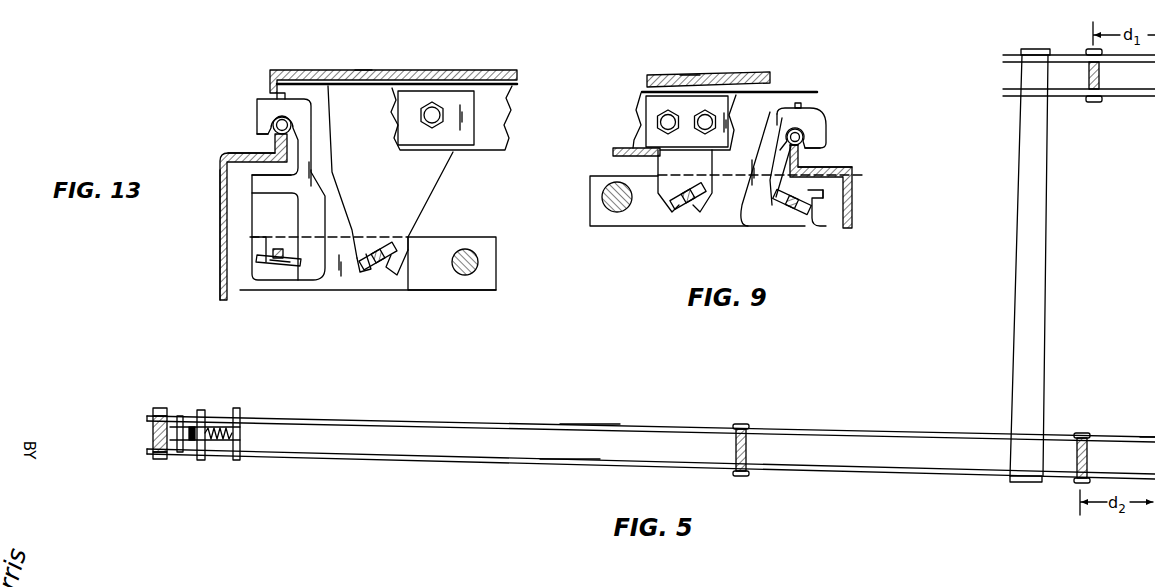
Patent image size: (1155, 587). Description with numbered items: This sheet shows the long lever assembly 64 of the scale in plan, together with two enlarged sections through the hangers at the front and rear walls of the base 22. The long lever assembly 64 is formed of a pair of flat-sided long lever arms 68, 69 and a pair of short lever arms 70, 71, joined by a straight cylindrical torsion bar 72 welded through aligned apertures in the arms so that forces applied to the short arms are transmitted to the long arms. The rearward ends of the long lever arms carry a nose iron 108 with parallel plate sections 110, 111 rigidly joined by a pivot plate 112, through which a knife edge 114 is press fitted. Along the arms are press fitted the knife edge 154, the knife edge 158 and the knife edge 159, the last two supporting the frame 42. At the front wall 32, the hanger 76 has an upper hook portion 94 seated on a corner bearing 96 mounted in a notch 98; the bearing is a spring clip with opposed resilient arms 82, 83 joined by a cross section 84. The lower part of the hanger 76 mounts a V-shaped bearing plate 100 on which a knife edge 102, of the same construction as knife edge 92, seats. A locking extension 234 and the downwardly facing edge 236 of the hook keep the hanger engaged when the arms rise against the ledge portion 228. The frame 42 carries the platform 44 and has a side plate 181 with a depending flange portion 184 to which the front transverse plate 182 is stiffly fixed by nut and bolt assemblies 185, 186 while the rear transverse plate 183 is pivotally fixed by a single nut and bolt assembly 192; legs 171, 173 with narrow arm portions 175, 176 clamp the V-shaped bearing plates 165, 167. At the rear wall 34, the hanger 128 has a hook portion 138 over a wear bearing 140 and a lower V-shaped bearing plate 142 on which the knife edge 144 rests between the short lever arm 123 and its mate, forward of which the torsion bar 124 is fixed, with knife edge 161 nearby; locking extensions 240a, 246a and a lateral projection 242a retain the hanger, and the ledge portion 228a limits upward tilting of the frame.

In FIG. 13, the base 22 is at (219, 233).
In FIG. 9, the front wall 32 is at (853, 202).
In FIG. 13, the rear wall 34 is at (220, 160).
In FIG. 13, the frame 42 is at (398, 82).
In FIG. 9, the frame 42 is at (757, 89).
In FIG. 13, the platform 44 is at (456, 72).
In FIG. 9, the platform 44 is at (722, 77).
In FIG. 5, the long lever assembly 64 is at (644, 416).
In FIG. 5, the long lever arm 68 is at (568, 463).
In FIG. 5, the long lever arm 69 is at (586, 423).
In FIG. 5, the short lever arm 70 is at (1133, 98).
In FIG. 9, the short lever arm 71 is at (605, 174).
In FIG. 5, the short lever arm 71 is at (1077, 58).
In FIG. 9, the torsion bar 72 is at (617, 213).
In FIG. 5, the torsion bar 72 is at (1035, 267).
In FIG. 9, the hanger 76 is at (757, 148).
In FIG. 9, the resilient arm 82 is at (787, 150).
In FIG. 9, the resilient arm 83 is at (820, 148).
In FIG. 13, the cross section 84 is at (503, 134).
In FIG. 9, the cross section 84 is at (778, 113).
In FIG. 5, the knife edge 92 is at (1154, 463).
In FIG. 9, the hook portion 94 is at (820, 140).
In FIG. 9, the corner bearing 96 is at (809, 131).
In FIG. 9, the notch 98 is at (801, 107).
In FIG. 9, the V-shaped bearing plate 100 is at (778, 204).
In FIG. 9, the knife edge 102 is at (804, 215).
In FIG. 5, the nose iron 108 is at (147, 454).
In FIG. 5, the plate section 110 is at (178, 452).
In FIG. 5, the plate section 111 is at (178, 416).
In FIG. 5, the pivot plate 112 is at (207, 428).
In FIG. 5, the knife edge 114 is at (152, 431).
In FIG. 13, the short lever arm 123 is at (488, 241).
In FIG. 13, the torsion bar 124 is at (478, 262).
In FIG. 13, the hanger 128 is at (334, 152).
In FIG. 13, the hook portion 138 is at (268, 107).
In FIG. 13, the wear bearing 140 is at (292, 122).
In FIG. 13, the V-shaped bearing plate 142 is at (288, 264).
In FIG. 13, the knife edge 144 is at (288, 250).
In FIG. 5, the knife edge 154 is at (742, 424).
In FIG. 5, the knife edge 158 is at (1076, 447).
In FIG. 9, the knife edge 159 is at (688, 207).
In FIG. 5, the knife edge 159 is at (1100, 78).
In FIG. 13, the knife edge 161 is at (380, 266).
In FIG. 9, the V-shaped bearing plate 165 is at (678, 181).
In FIG. 13, the V-shaped bearing plate 167 is at (373, 250).
In FIG. 9, the leg 171 is at (655, 183).
In FIG. 13, the leg 173 is at (434, 185).
In FIG. 13, the arm portion 175 is at (362, 278).
In FIG. 13, the arm portion 176 is at (399, 268).
In FIG. 13, the side plate 181 is at (363, 70).
In FIG. 9, the side plate 181 is at (681, 87).
In FIG. 9, the front transverse plate 182 is at (655, 107).
In FIG. 13, the rear transverse plate 183 is at (418, 146).
In FIG. 9, the depending flange portion 184 is at (633, 116).
In FIG. 9, the nut and bolt assembly 185 is at (673, 120).
In FIG. 9, the nut and bolt assembly 186 is at (709, 120).
In FIG. 13, the nut and bolt assembly 192 is at (442, 126).
In FIG. 9, the ledge portion 228 is at (853, 173).
In FIG. 13, the ledge portion 228a is at (252, 155).
In FIG. 9, the locking extension 234 is at (826, 200).
In FIG. 9, the downwardly facing edge 236 is at (808, 148).
In FIG. 13, the locking extension 240a is at (250, 248).
In FIG. 13, the lateral projection 242a is at (265, 186).
In FIG. 13, the locking extension 246a is at (262, 127).